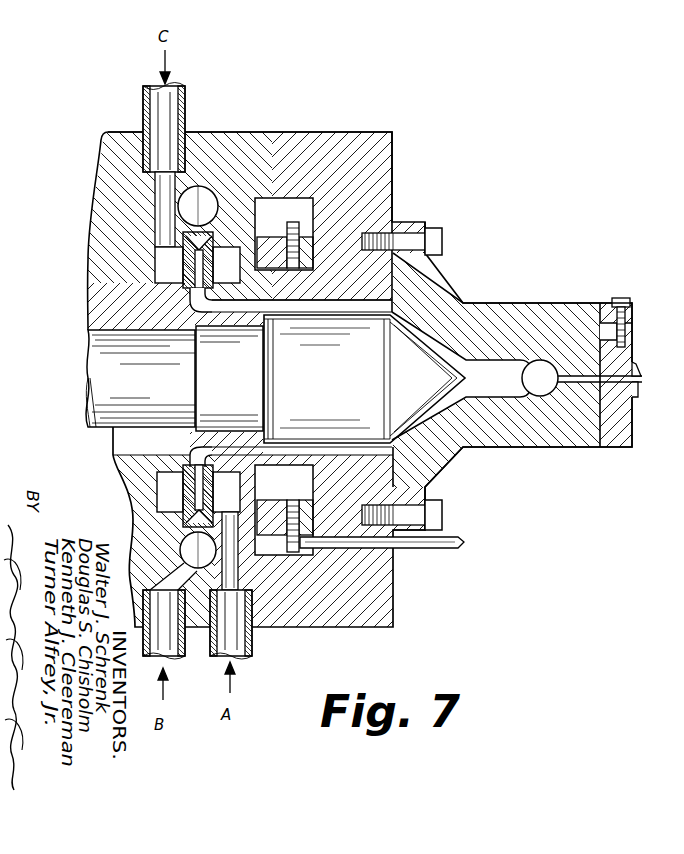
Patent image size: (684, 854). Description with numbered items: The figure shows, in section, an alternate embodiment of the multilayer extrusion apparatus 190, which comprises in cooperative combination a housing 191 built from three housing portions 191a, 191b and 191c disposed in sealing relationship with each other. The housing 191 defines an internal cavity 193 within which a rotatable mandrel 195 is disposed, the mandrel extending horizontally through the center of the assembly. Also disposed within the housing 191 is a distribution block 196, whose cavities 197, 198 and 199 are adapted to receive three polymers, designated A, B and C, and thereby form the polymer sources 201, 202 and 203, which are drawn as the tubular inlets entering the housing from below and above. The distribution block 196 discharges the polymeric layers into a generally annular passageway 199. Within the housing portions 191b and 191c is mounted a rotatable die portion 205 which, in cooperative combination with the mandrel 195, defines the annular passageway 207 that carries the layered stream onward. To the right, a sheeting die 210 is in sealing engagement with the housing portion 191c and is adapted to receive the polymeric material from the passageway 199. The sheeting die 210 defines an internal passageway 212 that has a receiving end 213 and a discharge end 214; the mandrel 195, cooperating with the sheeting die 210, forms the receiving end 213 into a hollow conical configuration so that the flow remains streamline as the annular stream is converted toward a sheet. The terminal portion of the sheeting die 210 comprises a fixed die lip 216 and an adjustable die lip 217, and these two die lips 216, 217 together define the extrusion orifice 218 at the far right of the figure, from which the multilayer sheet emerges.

The apparatus 190 is at (430, 176).
The housing 191 is at (209, 190).
The housing portion 191a is at (118, 142).
The housing portion 191b is at (242, 137).
The housing portion 191c is at (313, 128).
The internal cavity 193 is at (136, 447).
The rotatable mandrel 195 is at (343, 398).
The distribution block 196 is at (186, 278).
The cavity 197 is at (284, 234).
The cavity 198 is at (164, 264).
The cavity / annular passageway 199 is at (207, 198).
The polymer source 201 is at (240, 644).
The polymer source 202 is at (164, 648).
The polymer source 203 is at (162, 95).
The rotatable die portion 205 is at (275, 272).
The annular passageway 207 is at (432, 470).
The sheeting die 210 is at (535, 282).
The internal passageway 212 is at (498, 385).
The receiving end 213 is at (402, 313).
The discharge end 214 is at (640, 368).
The fixed die lip 216 is at (634, 397).
The adjustable die lip 217 is at (634, 360).
The extrusion orifice 218 is at (641, 388).